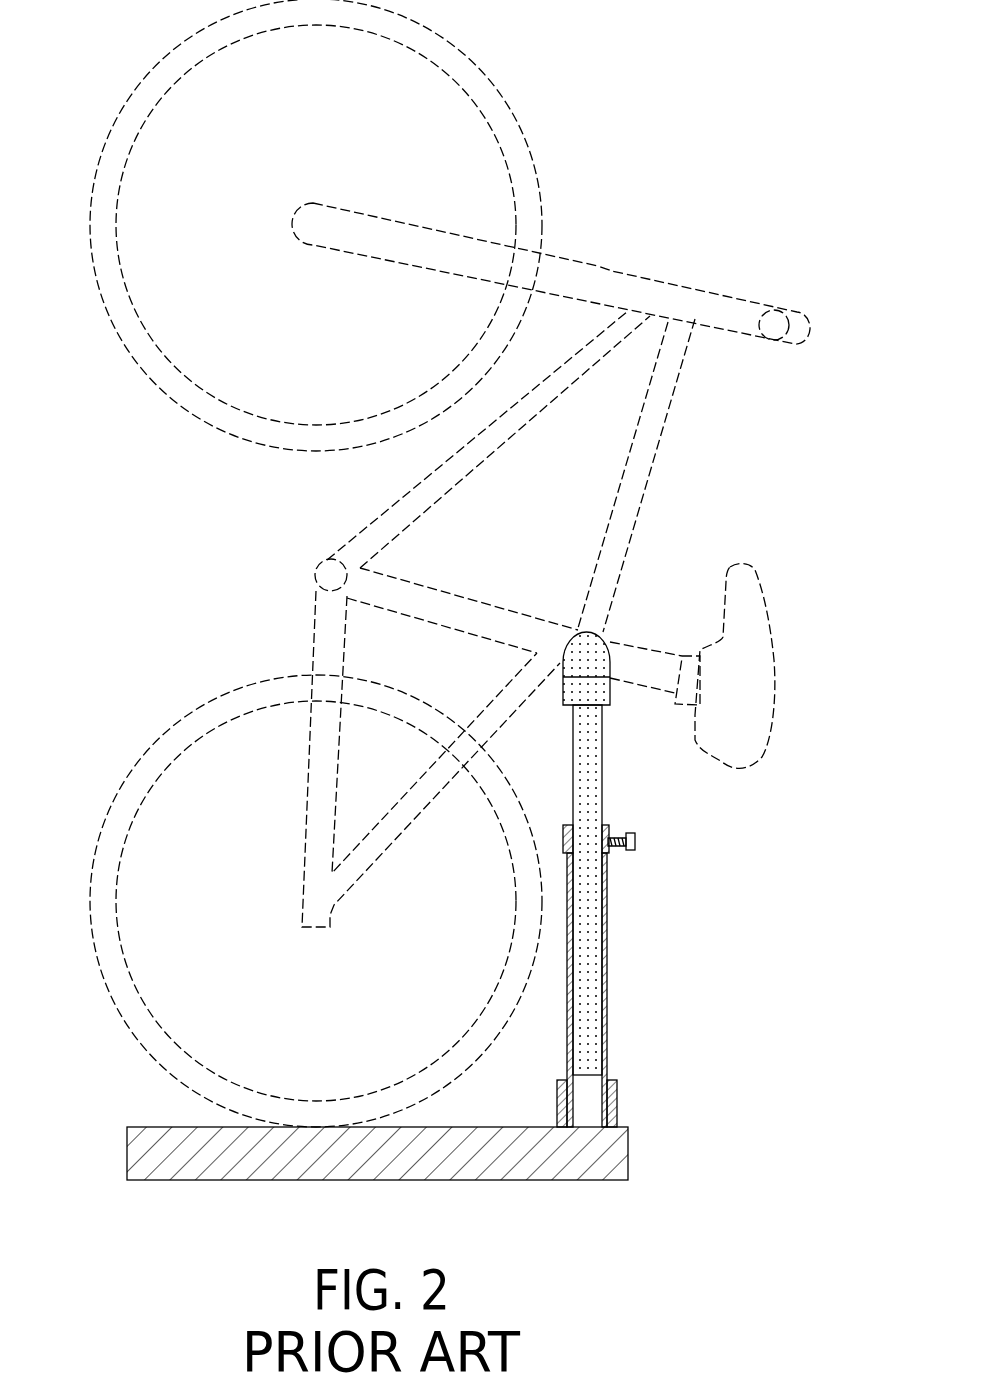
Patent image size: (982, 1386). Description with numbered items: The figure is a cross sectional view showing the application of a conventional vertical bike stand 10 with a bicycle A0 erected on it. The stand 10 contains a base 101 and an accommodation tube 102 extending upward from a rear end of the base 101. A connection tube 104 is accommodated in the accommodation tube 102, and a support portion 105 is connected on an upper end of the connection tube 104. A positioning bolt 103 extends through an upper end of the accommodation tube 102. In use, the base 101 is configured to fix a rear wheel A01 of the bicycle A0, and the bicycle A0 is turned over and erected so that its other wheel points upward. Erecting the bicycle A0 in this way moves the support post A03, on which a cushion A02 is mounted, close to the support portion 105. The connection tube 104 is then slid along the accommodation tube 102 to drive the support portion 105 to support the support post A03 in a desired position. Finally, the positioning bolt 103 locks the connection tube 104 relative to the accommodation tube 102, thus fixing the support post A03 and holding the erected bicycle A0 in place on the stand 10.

The vertical bike stand 10 is at (628, 1098).
The base 101 is at (140, 1143).
The accommodation tube 102 is at (607, 1003).
The positioning bolt 103 is at (635, 841).
The connection tube 104 is at (593, 800).
The support portion 105 is at (600, 693).
The bicycle A0 is at (292, 635).
The rear wheel A01 is at (163, 750).
The cushion A02 is at (757, 713).
The support post A03 is at (640, 660).